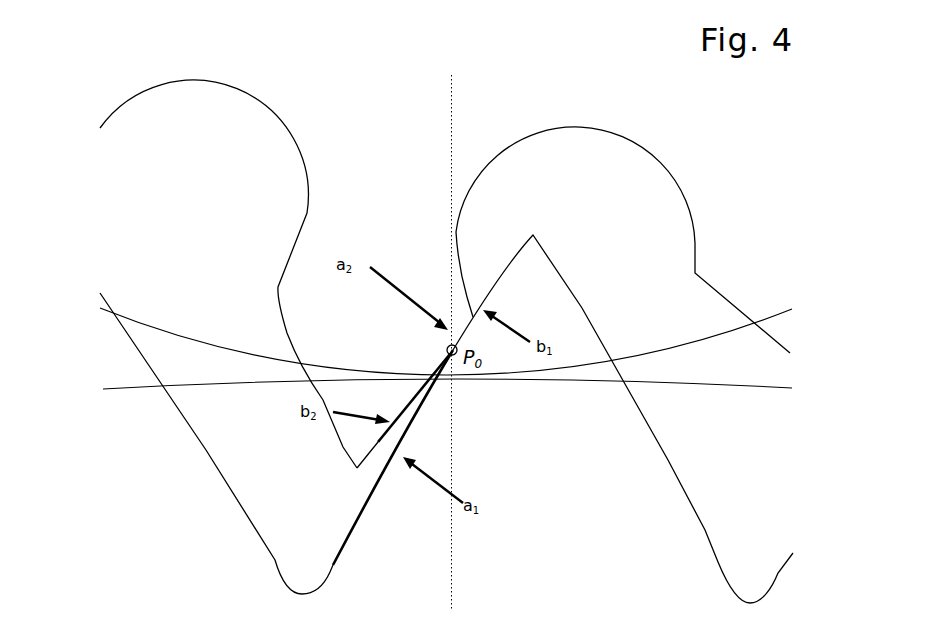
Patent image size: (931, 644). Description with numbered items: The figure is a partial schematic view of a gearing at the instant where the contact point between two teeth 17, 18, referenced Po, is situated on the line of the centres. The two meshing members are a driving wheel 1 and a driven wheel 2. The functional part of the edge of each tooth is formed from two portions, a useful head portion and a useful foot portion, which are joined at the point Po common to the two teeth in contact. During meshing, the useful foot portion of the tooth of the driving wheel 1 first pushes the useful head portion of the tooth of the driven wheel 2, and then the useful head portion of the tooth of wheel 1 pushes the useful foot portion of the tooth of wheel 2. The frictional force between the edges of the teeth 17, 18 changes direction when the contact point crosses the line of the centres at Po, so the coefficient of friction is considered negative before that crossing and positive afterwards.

The wheel 1 is at (668, 520).
The wheel 2 is at (445, 274).
The tooth 17 is at (544, 424).
The tooth 18 is at (364, 336).